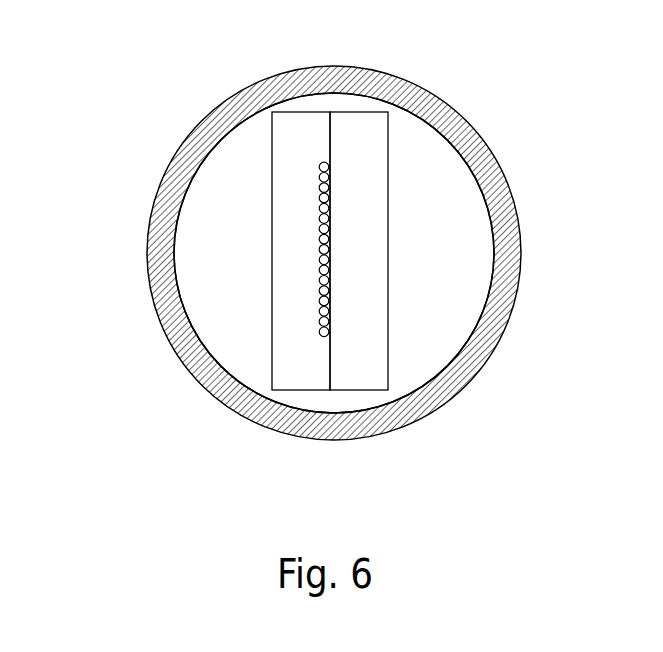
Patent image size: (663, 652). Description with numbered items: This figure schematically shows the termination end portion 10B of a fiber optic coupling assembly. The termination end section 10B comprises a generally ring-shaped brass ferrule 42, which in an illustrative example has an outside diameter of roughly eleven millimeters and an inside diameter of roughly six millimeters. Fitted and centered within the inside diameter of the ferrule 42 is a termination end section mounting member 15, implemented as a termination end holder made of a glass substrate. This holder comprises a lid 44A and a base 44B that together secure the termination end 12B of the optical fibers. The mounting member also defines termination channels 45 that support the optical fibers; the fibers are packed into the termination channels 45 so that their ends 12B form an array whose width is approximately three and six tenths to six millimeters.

The termination end portion 10B is at (132, 80).
The termination end of the optical fibers 12B is at (312, 156).
The termination end section mounting member 15 is at (430, 134).
The brass ferrule 42 is at (498, 160).
The lid 44A is at (388, 227).
The base 44B is at (272, 220).
The termination channels 45 is at (340, 314).